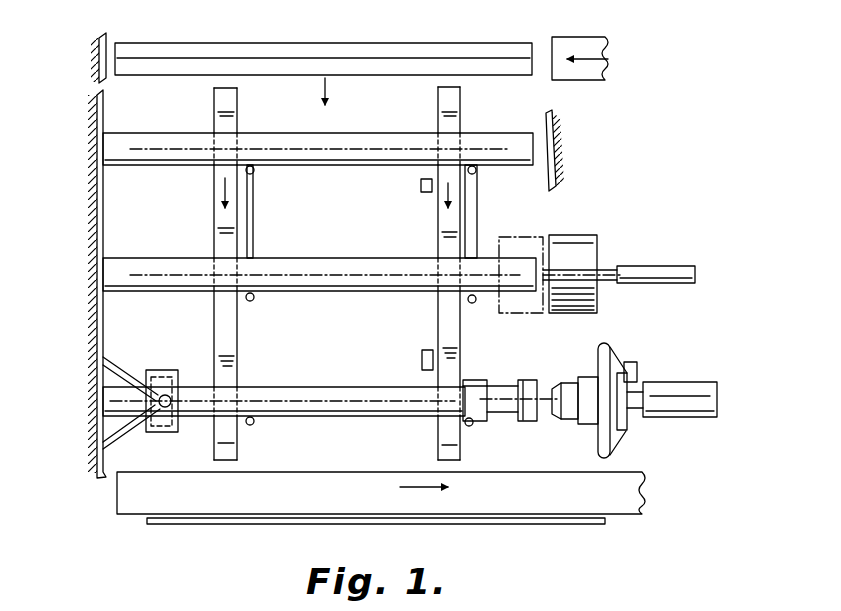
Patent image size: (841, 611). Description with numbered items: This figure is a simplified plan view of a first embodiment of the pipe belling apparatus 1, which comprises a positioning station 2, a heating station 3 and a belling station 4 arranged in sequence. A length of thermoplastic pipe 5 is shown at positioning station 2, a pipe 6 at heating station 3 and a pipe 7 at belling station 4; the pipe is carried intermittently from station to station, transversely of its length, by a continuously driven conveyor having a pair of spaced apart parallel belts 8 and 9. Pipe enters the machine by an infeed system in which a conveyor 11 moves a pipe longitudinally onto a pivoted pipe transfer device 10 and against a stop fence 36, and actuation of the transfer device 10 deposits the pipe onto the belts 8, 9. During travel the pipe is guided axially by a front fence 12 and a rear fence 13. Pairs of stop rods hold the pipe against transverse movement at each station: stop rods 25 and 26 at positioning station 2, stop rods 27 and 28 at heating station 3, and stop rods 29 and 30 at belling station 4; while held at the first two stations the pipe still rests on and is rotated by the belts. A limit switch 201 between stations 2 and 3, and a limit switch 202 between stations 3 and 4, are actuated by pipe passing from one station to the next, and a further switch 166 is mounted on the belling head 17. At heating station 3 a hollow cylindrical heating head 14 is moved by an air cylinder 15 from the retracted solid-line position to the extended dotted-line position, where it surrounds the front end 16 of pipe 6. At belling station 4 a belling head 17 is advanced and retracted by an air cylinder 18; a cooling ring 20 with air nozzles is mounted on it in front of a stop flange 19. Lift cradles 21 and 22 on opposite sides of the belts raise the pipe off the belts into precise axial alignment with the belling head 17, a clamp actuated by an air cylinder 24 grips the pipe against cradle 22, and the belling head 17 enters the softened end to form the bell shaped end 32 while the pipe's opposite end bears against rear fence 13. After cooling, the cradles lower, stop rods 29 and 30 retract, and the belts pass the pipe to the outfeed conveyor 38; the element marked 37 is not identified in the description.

The belling apparatus 1 is at (88, 128).
The positioning station 2 is at (500, 128).
The heating station 3 is at (598, 242).
The belling station 4 is at (641, 366).
The length of thermoplastic pipe 5 is at (398, 133).
The length of thermoplastic pipe 6 is at (398, 258).
The length of thermoplastic pipe 7 is at (386, 387).
The conveyor belt 8 is at (229, 104).
The conveyor belt 9 is at (461, 106).
The pipe transfer device 10 is at (275, 42).
The conveyor 11 is at (587, 46).
The front fence 12 is at (556, 164).
The rear fence 13 is at (98, 298).
The heating head 14 is at (598, 290).
The air cylinder 15 is at (670, 268).
The front end 16 is at (522, 264).
The belling head 17 is at (566, 419).
The air cylinder 18 is at (686, 414).
The stop flange 19 is at (629, 420).
The cooling ring 20 is at (610, 444).
The lift cradle 21 is at (488, 422).
The lift cradle 22 is at (168, 370).
The air cylinder 24 is at (146, 373).
The stop rod 25 is at (253, 172).
The stop rod 26 is at (475, 173).
The stop rod 27 is at (253, 300).
The stop rod 28 is at (473, 303).
The stop rod 29 is at (253, 424).
The stop rod 30 is at (470, 426).
The bell shaped end 32 is at (528, 380).
The stop fence 36 is at (104, 38).
The lower wall portion 37 is at (100, 393).
The outfeed conveyor 38 is at (530, 497).
The limit switch 166 is at (632, 362).
The limit switch 201 is at (421, 182).
The limit switch 202 is at (422, 354).